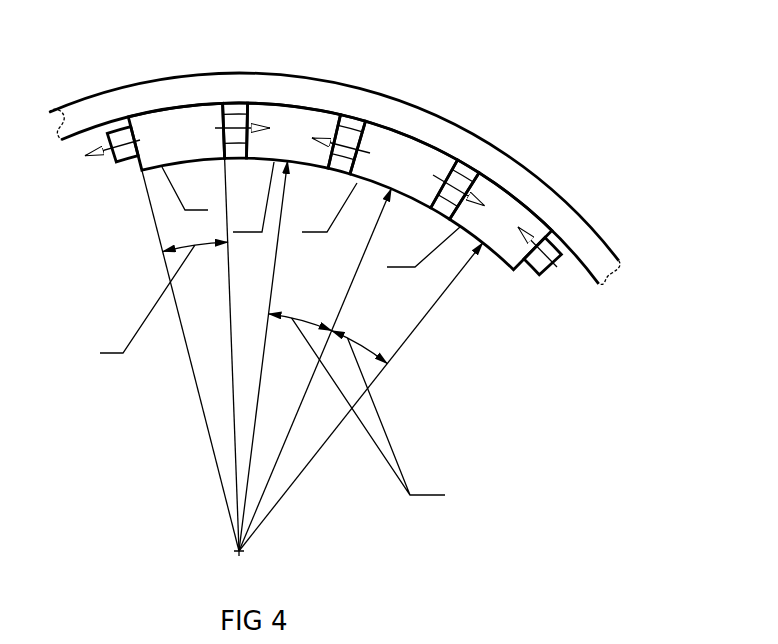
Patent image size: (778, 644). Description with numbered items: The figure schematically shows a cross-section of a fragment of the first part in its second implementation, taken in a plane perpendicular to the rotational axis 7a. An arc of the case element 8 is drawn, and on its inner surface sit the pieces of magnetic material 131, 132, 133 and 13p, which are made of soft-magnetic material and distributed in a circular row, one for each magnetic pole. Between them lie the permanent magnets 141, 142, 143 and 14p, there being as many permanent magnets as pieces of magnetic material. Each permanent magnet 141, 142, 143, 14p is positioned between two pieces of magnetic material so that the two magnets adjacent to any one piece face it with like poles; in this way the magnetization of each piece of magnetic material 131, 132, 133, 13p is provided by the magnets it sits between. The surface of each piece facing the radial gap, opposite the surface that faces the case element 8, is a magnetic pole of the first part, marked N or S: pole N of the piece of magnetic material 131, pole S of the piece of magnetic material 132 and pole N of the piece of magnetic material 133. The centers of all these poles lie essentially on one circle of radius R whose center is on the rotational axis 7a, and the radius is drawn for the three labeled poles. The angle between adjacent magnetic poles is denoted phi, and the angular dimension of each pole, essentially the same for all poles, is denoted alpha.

The case element 8 is at (97, 105).
The piece of magnetic material 13p is at (175, 117).
The permanent magnet 14p is at (232, 117).
The piece of magnetic material 131 is at (270, 117).
The permanent magnet 141 is at (348, 137).
The piece of magnetic material 132 is at (413, 157).
The permanent magnet 142 is at (455, 183).
The piece of magnetic material 133 is at (527, 220).
The permanent magnet 143 is at (540, 270).
The rotational axis 7a is at (243, 548).